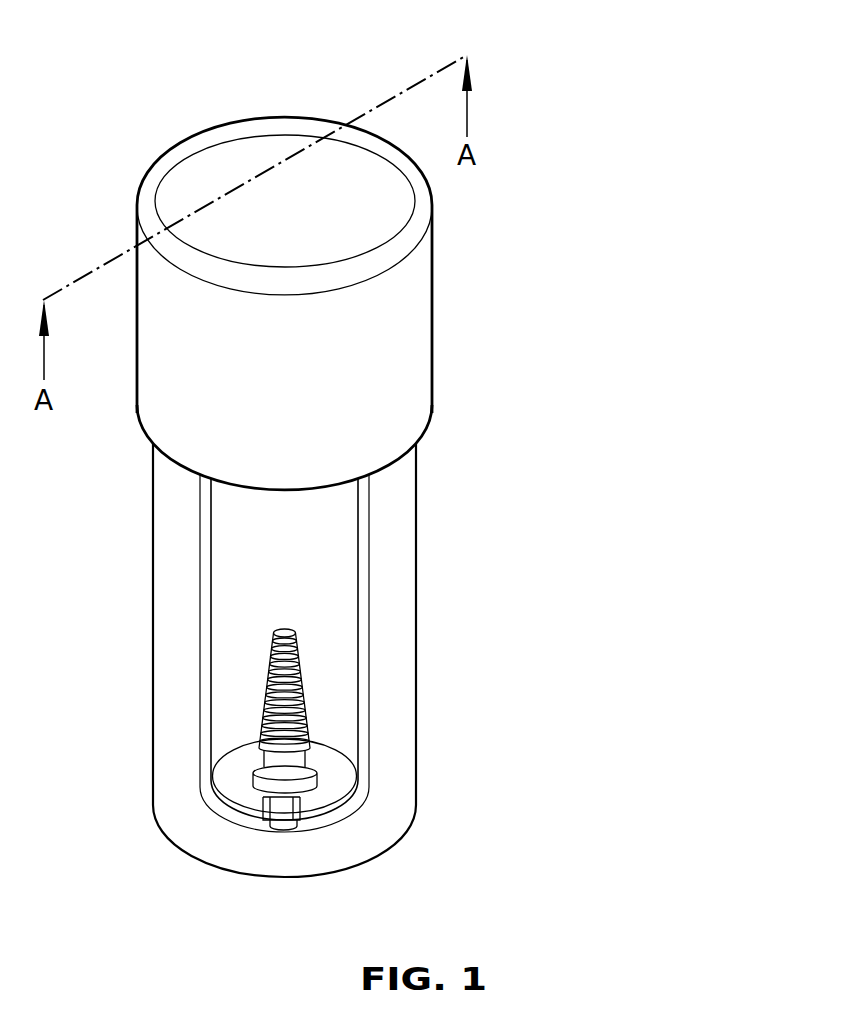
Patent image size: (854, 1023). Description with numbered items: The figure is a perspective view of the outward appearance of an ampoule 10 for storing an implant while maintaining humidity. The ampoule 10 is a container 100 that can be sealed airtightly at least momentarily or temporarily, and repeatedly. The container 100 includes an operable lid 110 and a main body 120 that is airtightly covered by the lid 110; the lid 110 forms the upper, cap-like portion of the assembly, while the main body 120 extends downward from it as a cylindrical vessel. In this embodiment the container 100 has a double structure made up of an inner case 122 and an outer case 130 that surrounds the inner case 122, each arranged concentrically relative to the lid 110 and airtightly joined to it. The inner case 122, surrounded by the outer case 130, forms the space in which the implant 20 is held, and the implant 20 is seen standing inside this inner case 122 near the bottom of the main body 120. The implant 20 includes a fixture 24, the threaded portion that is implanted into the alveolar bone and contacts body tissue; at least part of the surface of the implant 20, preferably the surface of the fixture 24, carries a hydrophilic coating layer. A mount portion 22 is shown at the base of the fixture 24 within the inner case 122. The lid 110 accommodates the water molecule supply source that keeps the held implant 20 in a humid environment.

The ampoule 10 is at (124, 113).
The implant 20 is at (366, 744).
The mount (nut) 22 is at (298, 803).
The fixture 24 is at (302, 668).
The container 100 is at (641, 548).
The lid 110 is at (408, 292).
The main body 120 is at (570, 480).
The inner case 122 is at (368, 506).
The outer case 130 is at (416, 573).